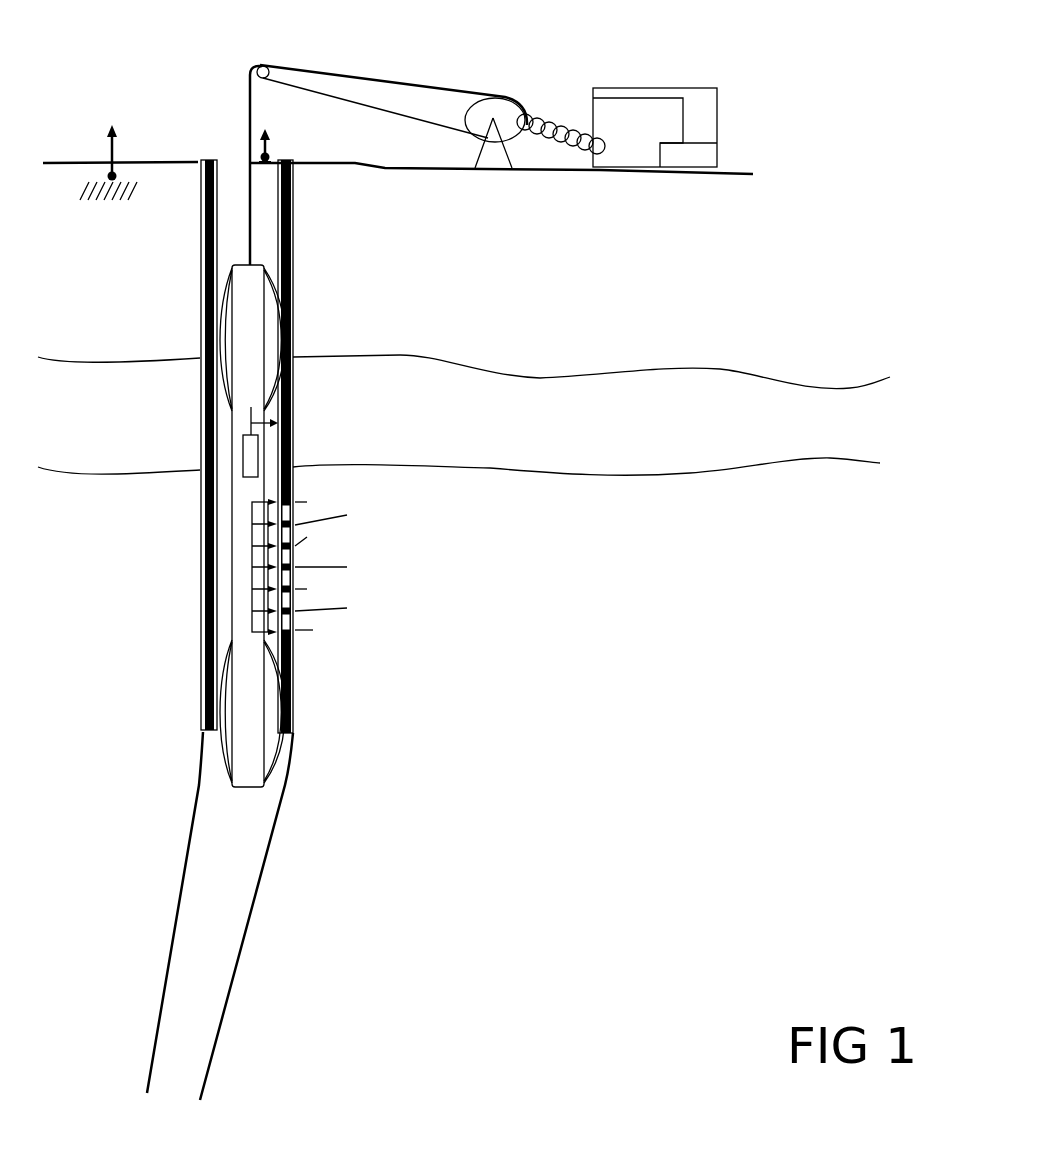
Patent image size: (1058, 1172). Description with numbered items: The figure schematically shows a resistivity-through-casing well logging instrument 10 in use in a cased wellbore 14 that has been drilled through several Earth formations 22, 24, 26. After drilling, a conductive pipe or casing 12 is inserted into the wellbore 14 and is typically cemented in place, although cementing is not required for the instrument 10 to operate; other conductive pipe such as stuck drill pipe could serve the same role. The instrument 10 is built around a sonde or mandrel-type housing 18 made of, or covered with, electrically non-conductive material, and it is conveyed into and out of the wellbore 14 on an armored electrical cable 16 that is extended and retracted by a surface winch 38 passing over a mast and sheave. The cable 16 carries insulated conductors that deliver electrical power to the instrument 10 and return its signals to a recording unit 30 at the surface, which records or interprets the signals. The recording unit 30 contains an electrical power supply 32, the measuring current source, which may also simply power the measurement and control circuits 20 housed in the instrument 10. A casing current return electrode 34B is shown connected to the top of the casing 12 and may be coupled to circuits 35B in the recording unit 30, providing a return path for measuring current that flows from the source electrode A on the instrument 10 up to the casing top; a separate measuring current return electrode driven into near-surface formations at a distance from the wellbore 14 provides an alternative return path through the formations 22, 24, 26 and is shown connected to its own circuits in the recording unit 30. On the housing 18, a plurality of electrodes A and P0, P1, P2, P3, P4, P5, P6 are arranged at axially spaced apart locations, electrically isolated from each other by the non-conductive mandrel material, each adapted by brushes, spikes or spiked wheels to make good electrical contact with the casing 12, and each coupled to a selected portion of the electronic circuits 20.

The well logging instrument 10 is at (250, 526).
The conductive pipe or casing 12 is at (268, 253).
The wellbore 14 is at (200, 312).
The armored electrical cable 16 is at (253, 228).
The sonde mandrel housing 18 is at (227, 583).
The measurement and control circuits 20 is at (250, 452).
The Earth formation 22 is at (498, 287).
The Earth formation 24 is at (480, 433).
The Earth formation 26 is at (480, 609).
The recording unit 30 is at (640, 88).
The electrical power supply 32 is at (713, 153).
The casing current return electrode 34B is at (293, 137).
The circuits 35B is at (577, 86).
The winch drum 38 is at (485, 92).
The electrode P0 is at (292, 422).
The electrode P1 is at (320, 497).
The electrode P2 is at (340, 519).
The electrode P3 is at (320, 536).
The electrode P4 is at (340, 569).
The electrode P5 is at (320, 591).
The electrode P6 is at (340, 606).
The source electrode A is at (314, 626).